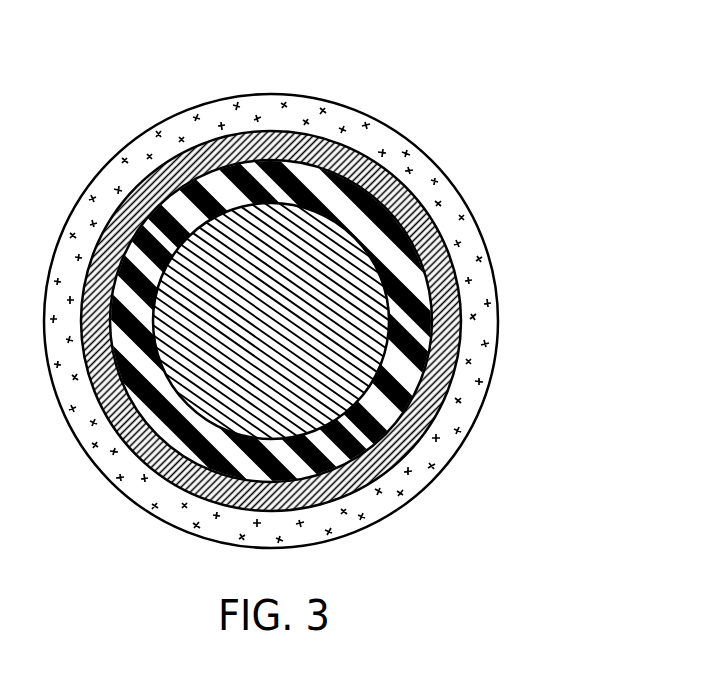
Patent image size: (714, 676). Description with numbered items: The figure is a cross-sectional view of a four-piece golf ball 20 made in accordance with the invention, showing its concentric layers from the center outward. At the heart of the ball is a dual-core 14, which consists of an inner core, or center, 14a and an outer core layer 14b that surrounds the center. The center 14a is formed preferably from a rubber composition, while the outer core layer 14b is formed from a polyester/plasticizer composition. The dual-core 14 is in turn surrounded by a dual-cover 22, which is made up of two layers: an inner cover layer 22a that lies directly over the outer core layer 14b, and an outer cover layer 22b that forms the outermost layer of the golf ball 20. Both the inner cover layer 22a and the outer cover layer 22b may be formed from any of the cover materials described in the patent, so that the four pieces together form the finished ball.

The golf ball 20 is at (323, 338).
The dual-cover 22 is at (325, 321).
The inner cover layer 22a is at (433, 247).
The outer cover layer 22b is at (485, 278).
The dual-core 14 is at (320, 338).
The inner core (center) 14a is at (325, 393).
The outer core layer 14b is at (410, 362).